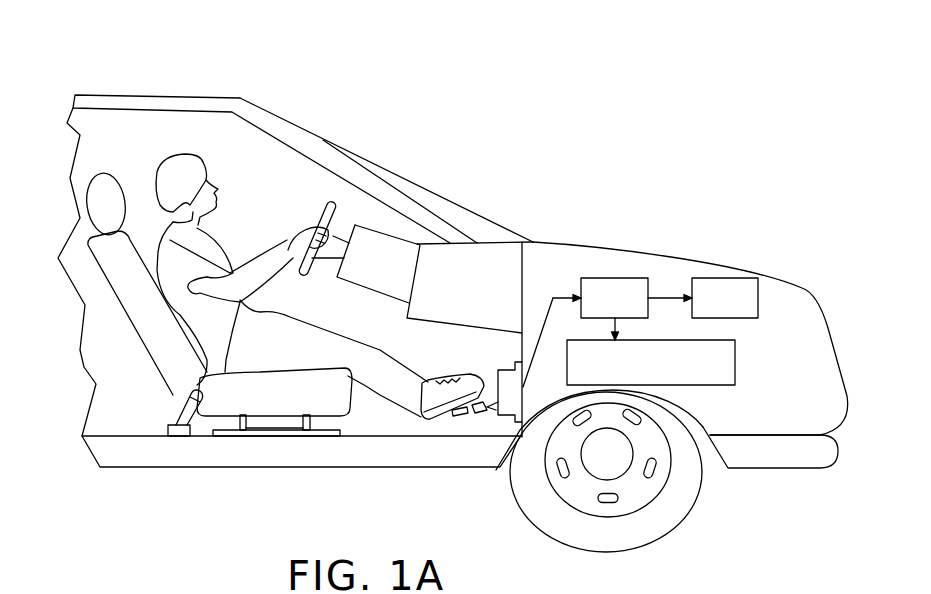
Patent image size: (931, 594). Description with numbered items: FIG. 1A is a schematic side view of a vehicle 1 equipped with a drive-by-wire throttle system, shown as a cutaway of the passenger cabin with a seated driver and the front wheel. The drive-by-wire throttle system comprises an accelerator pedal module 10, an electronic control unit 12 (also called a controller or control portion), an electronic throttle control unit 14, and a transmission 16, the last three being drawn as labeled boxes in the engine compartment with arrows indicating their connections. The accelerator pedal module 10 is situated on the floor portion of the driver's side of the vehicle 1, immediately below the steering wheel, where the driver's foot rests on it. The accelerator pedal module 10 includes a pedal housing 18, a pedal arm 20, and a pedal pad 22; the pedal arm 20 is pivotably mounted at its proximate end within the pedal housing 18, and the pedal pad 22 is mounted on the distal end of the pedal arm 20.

The vehicle 1 is at (250, 68).
The accelerator pedal module 10 is at (460, 362).
The electronic control unit 12 is at (598, 280).
The electronic throttle control unit 14 is at (728, 278).
The transmission 16 is at (735, 365).
The pedal housing 18 is at (505, 370).
The pedal arm 20 is at (495, 413).
The pedal pad 22 is at (465, 413).